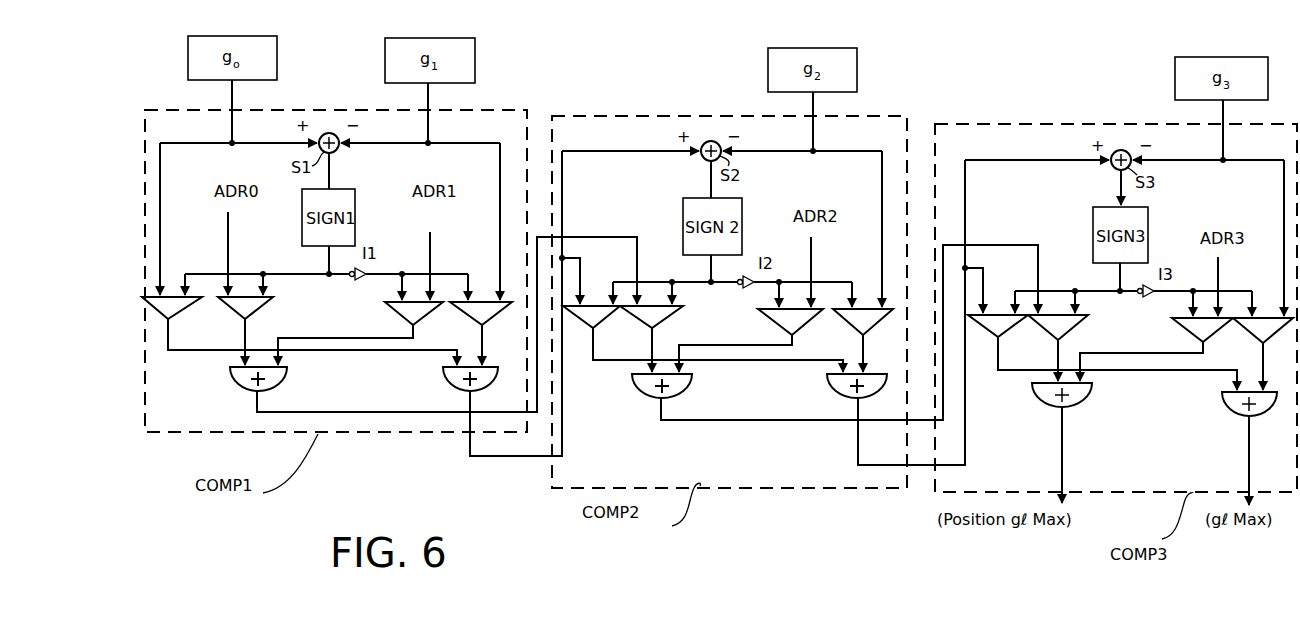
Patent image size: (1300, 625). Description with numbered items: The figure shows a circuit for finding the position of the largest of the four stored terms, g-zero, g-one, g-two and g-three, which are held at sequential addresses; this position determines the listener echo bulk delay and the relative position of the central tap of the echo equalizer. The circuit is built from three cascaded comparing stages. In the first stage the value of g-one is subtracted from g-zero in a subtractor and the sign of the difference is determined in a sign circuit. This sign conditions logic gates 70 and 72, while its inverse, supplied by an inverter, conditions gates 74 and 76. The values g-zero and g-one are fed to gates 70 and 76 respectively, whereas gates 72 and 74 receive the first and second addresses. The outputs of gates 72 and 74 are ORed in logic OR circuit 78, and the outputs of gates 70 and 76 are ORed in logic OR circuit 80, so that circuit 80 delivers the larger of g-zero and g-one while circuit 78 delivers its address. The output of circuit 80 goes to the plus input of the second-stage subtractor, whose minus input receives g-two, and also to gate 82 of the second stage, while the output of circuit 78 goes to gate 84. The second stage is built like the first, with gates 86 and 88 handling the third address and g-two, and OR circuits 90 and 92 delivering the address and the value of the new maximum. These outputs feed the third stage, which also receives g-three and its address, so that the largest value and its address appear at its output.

The logic gate 70 is at (178, 311).
The logic gate 72 is at (265, 306).
The logic gate 74 is at (396, 311).
The logic gate 76 is at (473, 314).
The logic OR circuit 78 is at (282, 380).
The logic OR circuit 80 is at (442, 374).
The logic gate 82 is at (581, 316).
The logic gate 84 is at (668, 316).
The logic gate 86 is at (770, 322).
The logic gate 88 is at (853, 329).
The logic OR circuit 90 is at (648, 396).
The logic OR circuit 92 is at (838, 388).